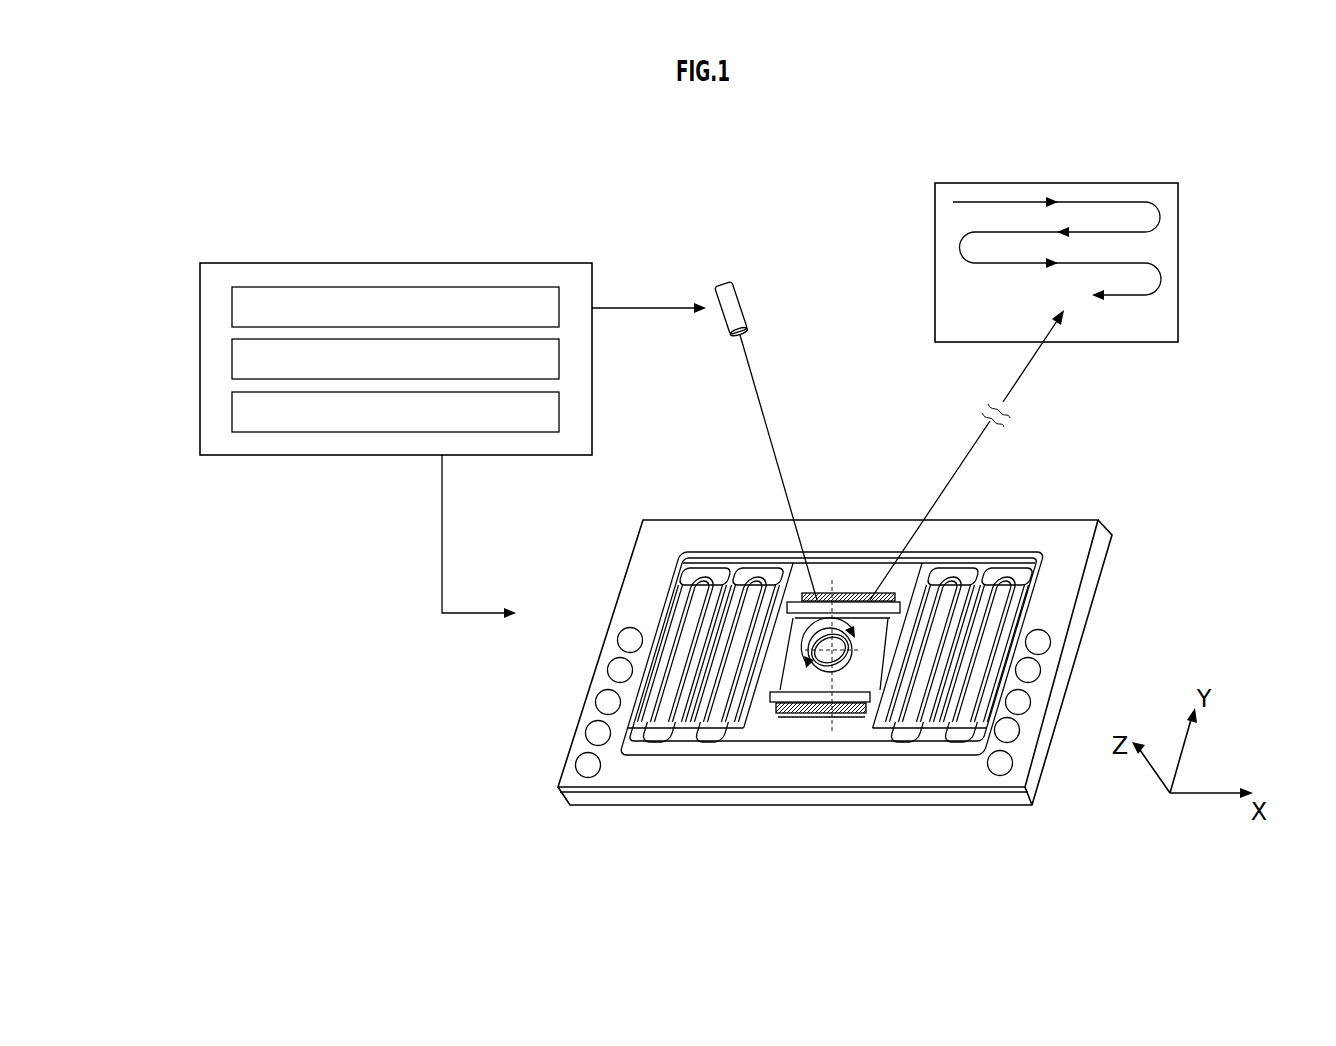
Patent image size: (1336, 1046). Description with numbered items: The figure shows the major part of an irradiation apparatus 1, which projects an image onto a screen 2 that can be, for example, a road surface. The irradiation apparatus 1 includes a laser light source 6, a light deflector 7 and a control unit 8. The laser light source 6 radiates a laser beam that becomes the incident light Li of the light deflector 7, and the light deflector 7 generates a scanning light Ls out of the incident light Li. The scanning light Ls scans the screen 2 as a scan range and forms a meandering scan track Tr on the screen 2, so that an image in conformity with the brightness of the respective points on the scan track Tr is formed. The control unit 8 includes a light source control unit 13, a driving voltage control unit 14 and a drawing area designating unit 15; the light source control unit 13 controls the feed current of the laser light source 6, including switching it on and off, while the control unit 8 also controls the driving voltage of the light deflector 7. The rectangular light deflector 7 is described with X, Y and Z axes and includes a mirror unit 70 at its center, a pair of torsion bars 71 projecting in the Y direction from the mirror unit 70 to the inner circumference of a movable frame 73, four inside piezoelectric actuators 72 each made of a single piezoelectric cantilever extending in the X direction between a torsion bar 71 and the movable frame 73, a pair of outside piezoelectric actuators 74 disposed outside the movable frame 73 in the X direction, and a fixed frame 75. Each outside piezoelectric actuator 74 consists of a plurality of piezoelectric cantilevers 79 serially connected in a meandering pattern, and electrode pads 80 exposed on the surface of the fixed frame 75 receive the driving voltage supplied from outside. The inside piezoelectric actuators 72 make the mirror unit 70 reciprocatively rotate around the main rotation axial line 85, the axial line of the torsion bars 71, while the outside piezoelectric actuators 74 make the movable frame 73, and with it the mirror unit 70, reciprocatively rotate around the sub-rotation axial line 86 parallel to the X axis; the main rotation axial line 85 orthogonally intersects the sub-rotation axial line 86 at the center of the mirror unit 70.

The irradiation apparatus 1 is at (486, 184).
The screen 2 is at (1025, 241).
The laser light source 6 is at (742, 287).
The light deflector 7 is at (830, 655).
The control unit 8 is at (362, 335).
The light source control unit 13 is at (232, 315).
The driving voltage control unit 14 is at (232, 369).
The drawing area designating unit 15 is at (232, 424).
The mirror unit 70 is at (806, 700).
The torsion bar 71 is at (853, 596).
The piezoelectric actuator 72 is at (800, 598).
The movable frame 73 is at (848, 720).
The piezoelectric actuator 74 is at (718, 544).
The fixed frame 75 is at (1108, 541).
The piezoelectric cantilever 79 is at (715, 745).
The electrode pad 80 is at (576, 765).
The main rotation axial line 85 is at (813, 705).
The sub-rotation axial line 86 is at (852, 642).
The incident light Li is at (758, 397).
The scanning light Ls is at (1027, 371).
The scan track Tr is at (1089, 200).